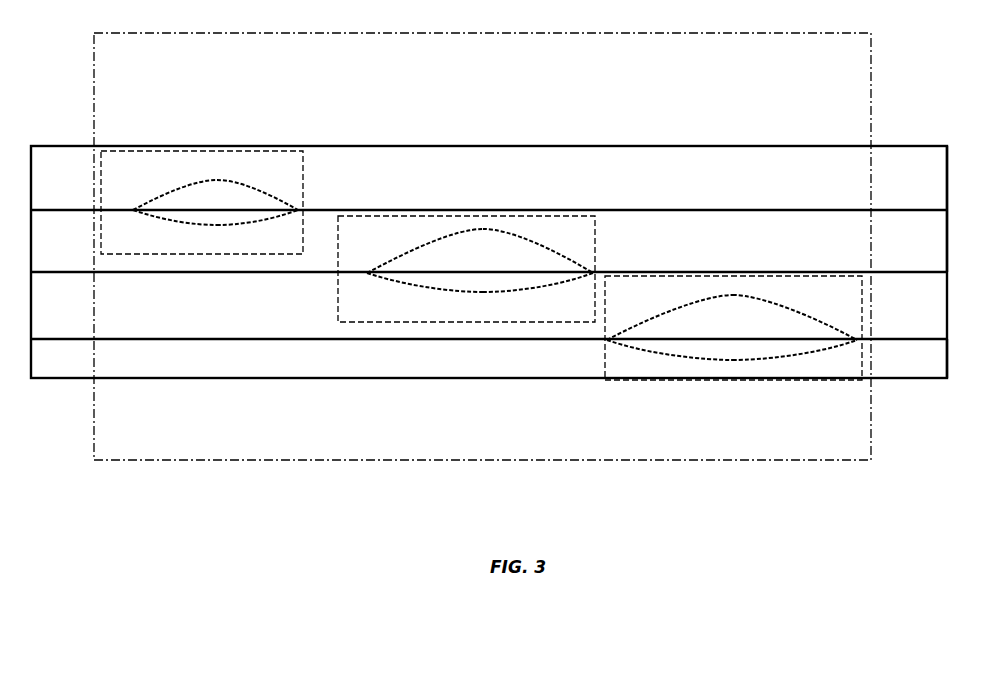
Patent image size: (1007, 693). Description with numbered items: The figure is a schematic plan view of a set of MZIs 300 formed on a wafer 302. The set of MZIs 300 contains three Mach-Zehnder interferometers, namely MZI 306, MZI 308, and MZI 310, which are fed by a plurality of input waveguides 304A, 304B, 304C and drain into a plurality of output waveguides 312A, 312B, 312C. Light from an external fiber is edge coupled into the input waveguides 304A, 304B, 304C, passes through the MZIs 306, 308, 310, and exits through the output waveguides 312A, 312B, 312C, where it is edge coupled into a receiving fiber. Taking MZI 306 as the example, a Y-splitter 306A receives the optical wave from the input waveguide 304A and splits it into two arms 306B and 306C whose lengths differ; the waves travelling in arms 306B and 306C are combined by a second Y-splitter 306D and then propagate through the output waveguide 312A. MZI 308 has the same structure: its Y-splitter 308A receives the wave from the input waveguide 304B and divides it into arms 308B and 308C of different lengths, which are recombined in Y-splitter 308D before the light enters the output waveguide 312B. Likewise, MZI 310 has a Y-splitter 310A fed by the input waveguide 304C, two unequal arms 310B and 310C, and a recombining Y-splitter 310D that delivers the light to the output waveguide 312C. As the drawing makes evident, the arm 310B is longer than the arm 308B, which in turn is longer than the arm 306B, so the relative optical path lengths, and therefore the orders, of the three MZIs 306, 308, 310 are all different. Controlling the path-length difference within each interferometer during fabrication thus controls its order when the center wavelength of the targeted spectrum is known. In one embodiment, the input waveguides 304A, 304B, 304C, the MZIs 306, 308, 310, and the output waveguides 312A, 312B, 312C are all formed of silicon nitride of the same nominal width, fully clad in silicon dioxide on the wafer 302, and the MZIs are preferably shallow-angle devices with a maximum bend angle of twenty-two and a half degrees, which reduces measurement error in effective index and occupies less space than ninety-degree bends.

The set of MZIs 300 is at (155, 21).
The wafer 302 is at (668, 138).
The input waveguide 304A is at (489, 197).
The input waveguide 304B is at (489, 259).
The input waveguide 304C is at (489, 327).
The MZI 306 is at (180, 146).
The Y-splitter 306A is at (141, 201).
The arm 306B is at (215, 176).
The arm 306C is at (190, 230).
The Y-splitter 306D is at (286, 227).
The MZI 308 is at (435, 210).
The Y-splitter 308A is at (380, 262).
The arm 308B is at (516, 237).
The arm 308C is at (458, 296).
The Y-splitter 308D is at (572, 282).
The MZI 310 is at (698, 387).
The Y-splitter 310A is at (622, 327).
The arm 310B is at (762, 297).
The arm 310C is at (677, 355).
The Y-splitter 310D is at (845, 350).
The output waveguide 312A is at (919, 178).
The output waveguide 312B is at (919, 241).
The output waveguide 312C is at (918, 358).